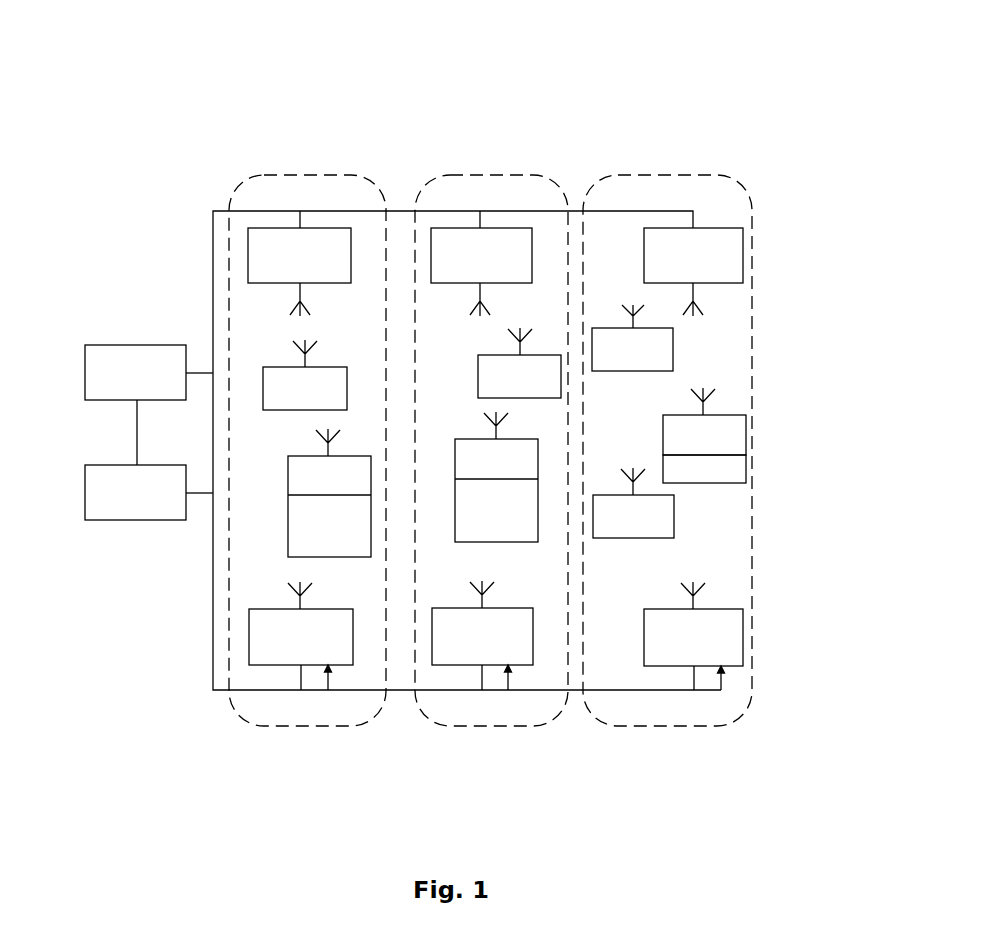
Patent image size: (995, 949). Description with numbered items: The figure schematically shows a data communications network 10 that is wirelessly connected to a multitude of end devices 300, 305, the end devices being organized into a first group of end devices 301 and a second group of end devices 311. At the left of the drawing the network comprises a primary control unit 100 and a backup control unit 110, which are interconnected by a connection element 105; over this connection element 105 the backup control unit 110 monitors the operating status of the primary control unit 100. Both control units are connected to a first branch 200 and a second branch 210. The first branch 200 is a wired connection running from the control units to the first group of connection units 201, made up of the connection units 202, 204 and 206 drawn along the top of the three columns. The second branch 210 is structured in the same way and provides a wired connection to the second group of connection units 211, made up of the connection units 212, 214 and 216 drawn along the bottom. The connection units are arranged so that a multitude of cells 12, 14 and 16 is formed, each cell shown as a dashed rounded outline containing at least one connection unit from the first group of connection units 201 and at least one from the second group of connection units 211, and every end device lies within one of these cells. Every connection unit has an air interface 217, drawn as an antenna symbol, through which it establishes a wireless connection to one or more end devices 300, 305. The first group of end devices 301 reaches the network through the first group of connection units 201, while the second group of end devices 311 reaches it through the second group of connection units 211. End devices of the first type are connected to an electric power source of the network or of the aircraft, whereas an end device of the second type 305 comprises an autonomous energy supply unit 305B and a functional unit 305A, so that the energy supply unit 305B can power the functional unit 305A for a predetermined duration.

The data communications network 10 is at (150, 92).
The cell 12 is at (268, 173).
The cell 14 is at (482, 175).
The cell 16 is at (653, 175).
The primary control unit 100 is at (106, 353).
The connection element 105 is at (137, 430).
The backup control unit 110 is at (117, 510).
The first branch 200 is at (213, 278).
The first group of connection units 201 is at (758, 230).
The connection unit 202 is at (260, 242).
The connection unit 204 is at (447, 237).
The connection unit 206 is at (716, 240).
The second branch 210 is at (213, 635).
The second group of connection units 211 is at (766, 640).
The connection unit 212 is at (273, 655).
The connection unit 214 is at (512, 648).
The connection unit 216 is at (668, 650).
The air interface 217 is at (697, 600).
The end device 300 is at (662, 348).
The first group of end devices 301 is at (735, 352).
The end device of the second type 305 is at (718, 414).
The functional unit 305A is at (725, 435).
The autonomous energy supply unit 305B is at (732, 473).
The second group of end devices 311 is at (768, 528).